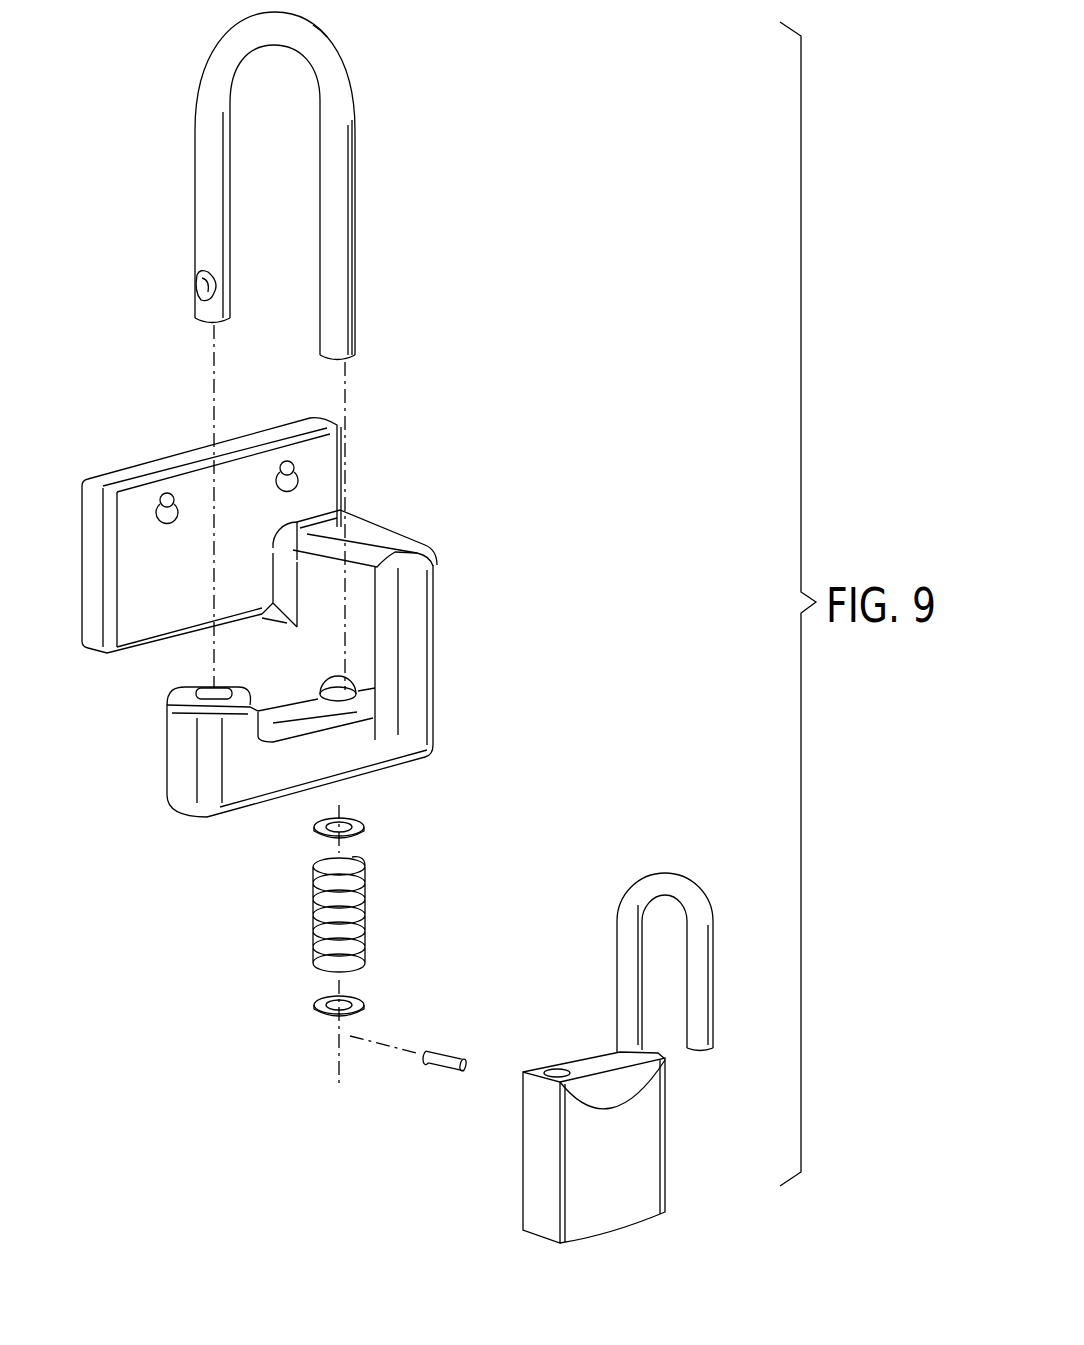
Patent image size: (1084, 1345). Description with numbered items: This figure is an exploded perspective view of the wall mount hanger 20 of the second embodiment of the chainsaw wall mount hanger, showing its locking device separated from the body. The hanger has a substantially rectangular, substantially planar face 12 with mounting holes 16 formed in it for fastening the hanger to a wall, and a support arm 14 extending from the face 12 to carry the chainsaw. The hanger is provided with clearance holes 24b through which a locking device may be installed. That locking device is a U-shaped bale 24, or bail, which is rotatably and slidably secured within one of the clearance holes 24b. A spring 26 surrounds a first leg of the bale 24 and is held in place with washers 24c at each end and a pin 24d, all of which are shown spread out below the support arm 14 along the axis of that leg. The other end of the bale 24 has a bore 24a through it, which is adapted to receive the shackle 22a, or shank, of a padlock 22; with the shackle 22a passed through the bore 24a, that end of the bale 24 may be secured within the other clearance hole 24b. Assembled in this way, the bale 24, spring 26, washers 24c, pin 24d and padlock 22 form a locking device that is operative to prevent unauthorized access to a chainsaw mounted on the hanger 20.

The face 12 is at (135, 588).
The support arm 14 is at (378, 750).
The mounting holes 16 is at (158, 531).
The wall mount hanger 20 is at (482, 419).
The padlock 22 is at (640, 1135).
The shackle 22a is at (700, 988).
The U-shaped bale 24 is at (327, 43).
The bore 24a is at (198, 291).
The clearance holes 24b is at (200, 690).
The washers 24c is at (318, 829).
The pin 24d is at (447, 1057).
The spring 26 is at (362, 920).